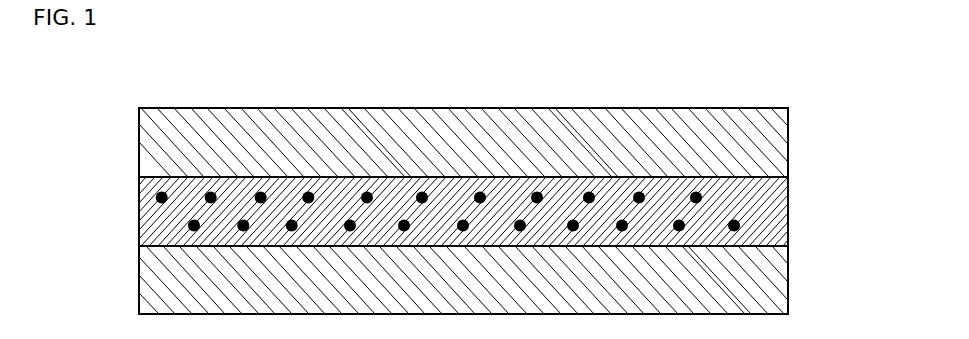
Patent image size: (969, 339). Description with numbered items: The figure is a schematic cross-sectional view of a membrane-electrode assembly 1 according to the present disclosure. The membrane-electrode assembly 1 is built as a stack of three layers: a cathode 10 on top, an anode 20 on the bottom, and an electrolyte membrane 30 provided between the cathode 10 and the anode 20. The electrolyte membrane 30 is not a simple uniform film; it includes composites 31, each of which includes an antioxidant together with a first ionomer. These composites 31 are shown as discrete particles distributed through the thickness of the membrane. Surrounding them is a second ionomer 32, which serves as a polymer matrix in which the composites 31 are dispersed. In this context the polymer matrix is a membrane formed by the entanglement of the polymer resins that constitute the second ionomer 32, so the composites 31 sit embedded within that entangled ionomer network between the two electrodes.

The membrane-electrode assembly 1 is at (169, 80).
The cathode 10 is at (788, 147).
The anode 20 is at (788, 275).
The electrolyte membrane 30 is at (77, 198).
The composites 31 is at (161, 197).
The second ionomer 32 is at (165, 232).